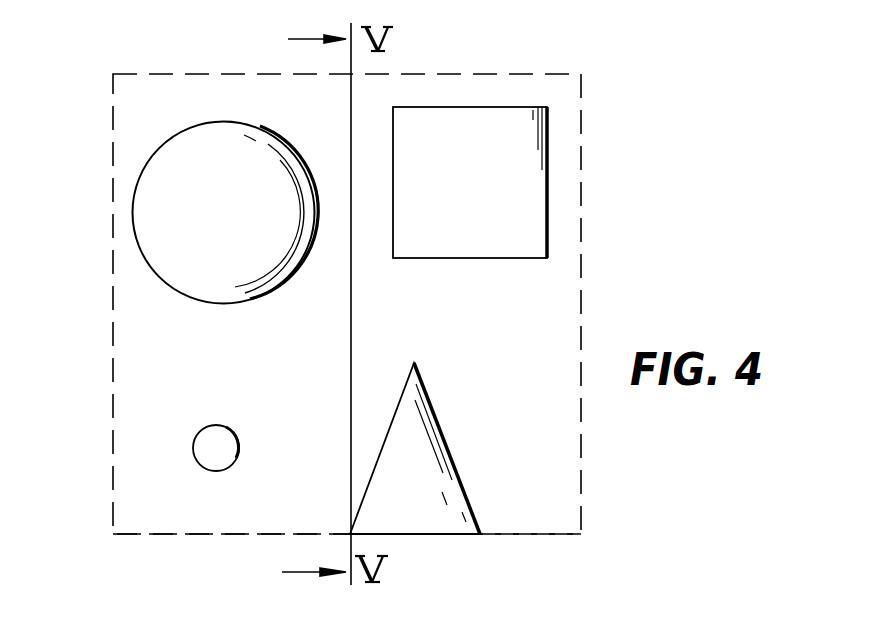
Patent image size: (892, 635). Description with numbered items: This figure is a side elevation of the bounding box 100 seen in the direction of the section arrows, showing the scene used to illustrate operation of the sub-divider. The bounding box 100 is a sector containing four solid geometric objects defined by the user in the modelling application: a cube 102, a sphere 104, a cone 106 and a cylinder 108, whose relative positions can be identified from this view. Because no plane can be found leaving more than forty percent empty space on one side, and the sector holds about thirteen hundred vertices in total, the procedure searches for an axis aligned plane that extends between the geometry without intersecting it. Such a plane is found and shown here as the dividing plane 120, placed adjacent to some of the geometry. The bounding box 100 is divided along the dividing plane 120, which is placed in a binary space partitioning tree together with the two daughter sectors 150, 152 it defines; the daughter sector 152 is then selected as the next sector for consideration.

The bounding box 100 is at (512, 75).
The cube 102 is at (515, 185).
The sphere 104 is at (177, 262).
The cone 106 is at (418, 453).
The cylinder 108 is at (215, 437).
The dividing plane 120 is at (352, 318).
The daughter sector 150 is at (210, 535).
The daughter sector 152 is at (545, 542).